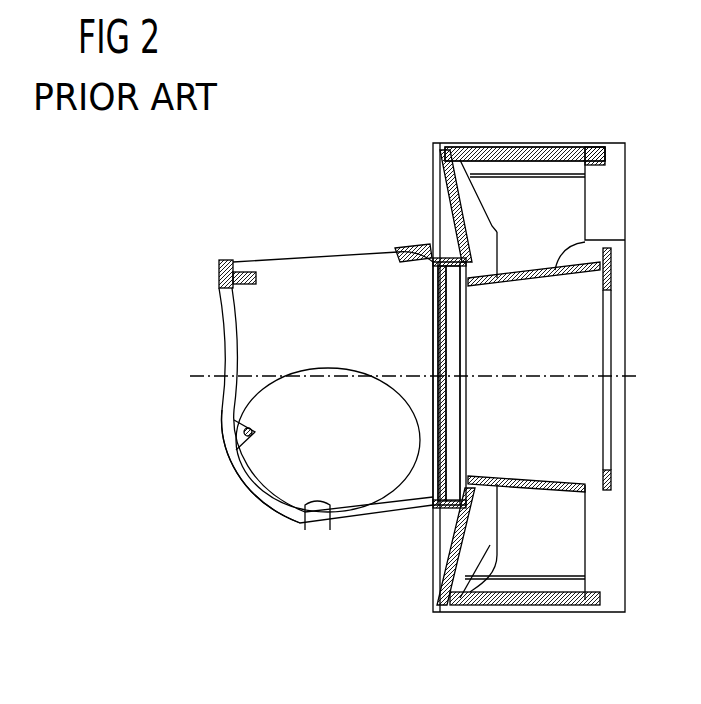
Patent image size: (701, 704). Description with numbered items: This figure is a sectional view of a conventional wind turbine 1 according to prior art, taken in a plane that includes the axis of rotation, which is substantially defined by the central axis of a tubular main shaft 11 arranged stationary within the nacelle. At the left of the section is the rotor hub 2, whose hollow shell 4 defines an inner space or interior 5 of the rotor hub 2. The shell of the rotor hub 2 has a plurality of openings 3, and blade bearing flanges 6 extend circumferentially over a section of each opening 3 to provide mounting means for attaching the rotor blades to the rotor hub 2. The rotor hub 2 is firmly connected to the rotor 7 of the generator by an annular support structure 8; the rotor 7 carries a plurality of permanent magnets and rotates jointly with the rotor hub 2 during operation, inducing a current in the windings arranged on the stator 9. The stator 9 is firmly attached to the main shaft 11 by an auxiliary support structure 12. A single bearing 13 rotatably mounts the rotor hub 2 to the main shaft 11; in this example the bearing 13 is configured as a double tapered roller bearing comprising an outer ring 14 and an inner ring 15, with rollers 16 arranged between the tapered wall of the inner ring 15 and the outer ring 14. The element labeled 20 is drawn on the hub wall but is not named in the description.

The wind turbine 1 is at (286, 399).
The rotor hub 2 is at (300, 419).
The openings 3 is at (255, 500).
The hollow shell 4 is at (228, 350).
The interior 5 is at (307, 352).
The blade bearing flanges 6 is at (240, 448).
The rotor 7 is at (531, 612).
The annular support structure 8 is at (433, 198).
The stator 9 is at (531, 145).
The tubular main shaft 11 is at (610, 242).
The auxiliary support structure 12 is at (506, 148).
The bearing 13 is at (425, 528).
The outer ring 14 is at (428, 252).
The inner ring 15 is at (405, 272).
The rollers 16 is at (470, 472).
The membrane fold 20 is at (200, 378).